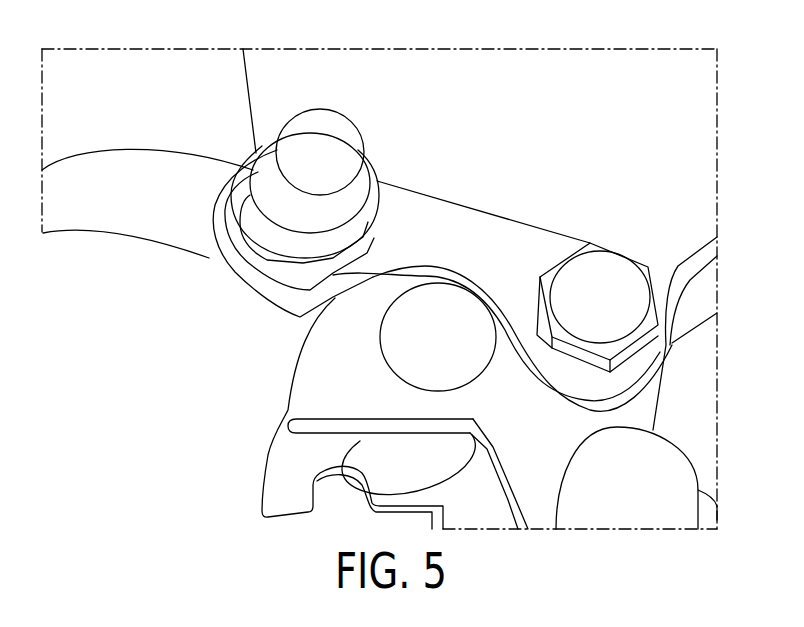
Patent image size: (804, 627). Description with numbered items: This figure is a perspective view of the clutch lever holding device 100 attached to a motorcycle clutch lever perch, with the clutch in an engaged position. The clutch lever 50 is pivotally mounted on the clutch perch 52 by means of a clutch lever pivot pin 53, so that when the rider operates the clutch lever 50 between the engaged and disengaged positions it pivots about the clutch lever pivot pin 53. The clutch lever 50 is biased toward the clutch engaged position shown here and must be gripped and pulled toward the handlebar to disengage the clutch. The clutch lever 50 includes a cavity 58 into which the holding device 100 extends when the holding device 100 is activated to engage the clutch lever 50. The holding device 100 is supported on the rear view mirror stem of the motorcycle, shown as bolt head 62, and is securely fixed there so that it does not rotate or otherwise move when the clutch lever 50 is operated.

The clutch lever 50 is at (164, 172).
The clutch perch 52 is at (561, 63).
The clutch lever pivot pin 53 is at (463, 367).
The cavity 58 is at (328, 348).
The bolt head 62 is at (618, 290).
The clutch lever holding device 100 is at (272, 108).